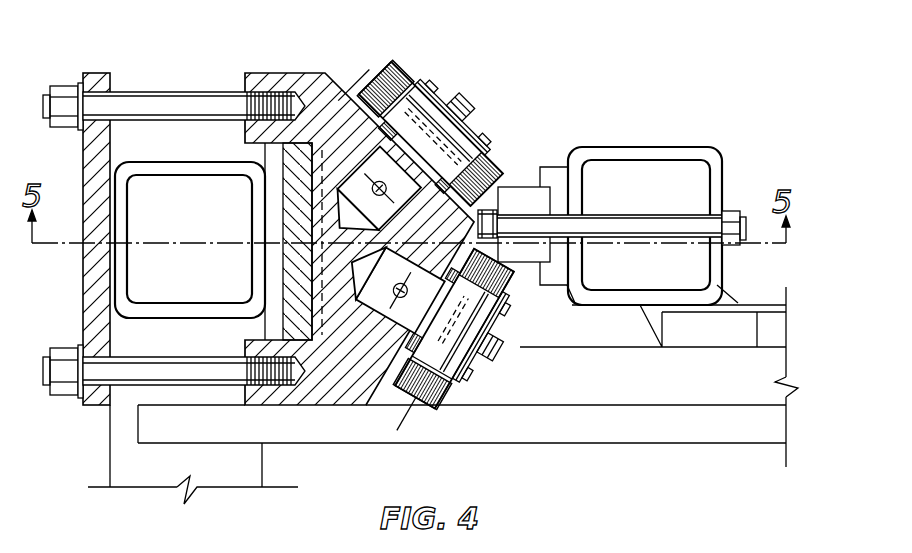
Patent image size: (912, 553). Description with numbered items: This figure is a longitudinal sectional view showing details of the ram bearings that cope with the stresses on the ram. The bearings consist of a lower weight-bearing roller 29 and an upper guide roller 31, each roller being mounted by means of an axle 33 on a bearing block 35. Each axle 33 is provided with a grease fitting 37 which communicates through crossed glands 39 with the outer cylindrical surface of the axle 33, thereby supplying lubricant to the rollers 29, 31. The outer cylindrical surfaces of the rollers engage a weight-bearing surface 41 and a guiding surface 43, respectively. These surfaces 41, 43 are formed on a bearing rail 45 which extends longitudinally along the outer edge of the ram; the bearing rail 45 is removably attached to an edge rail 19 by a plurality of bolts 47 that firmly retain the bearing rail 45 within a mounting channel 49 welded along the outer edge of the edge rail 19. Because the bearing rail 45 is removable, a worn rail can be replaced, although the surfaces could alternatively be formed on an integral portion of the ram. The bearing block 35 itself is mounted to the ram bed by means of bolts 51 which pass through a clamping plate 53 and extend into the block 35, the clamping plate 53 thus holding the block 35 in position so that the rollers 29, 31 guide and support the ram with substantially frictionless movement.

The edge rail 19 is at (628, 147).
The lower weight-bearing roller 29 is at (448, 390).
The upper guide roller 31 is at (404, 67).
The axle 33 is at (350, 272).
The bearing block 35 is at (281, 73).
The grease fitting 37 is at (470, 100).
The crossed glands 39 is at (453, 358).
The weight-bearing surface 41 is at (518, 262).
The guiding surface 43 is at (502, 183).
The bearing rail 45 is at (542, 182).
The bolts 47 is at (737, 210).
The mounting channel 49 is at (539, 285).
The bolts 51 is at (162, 90).
The clamping plate 53 is at (83, 282).